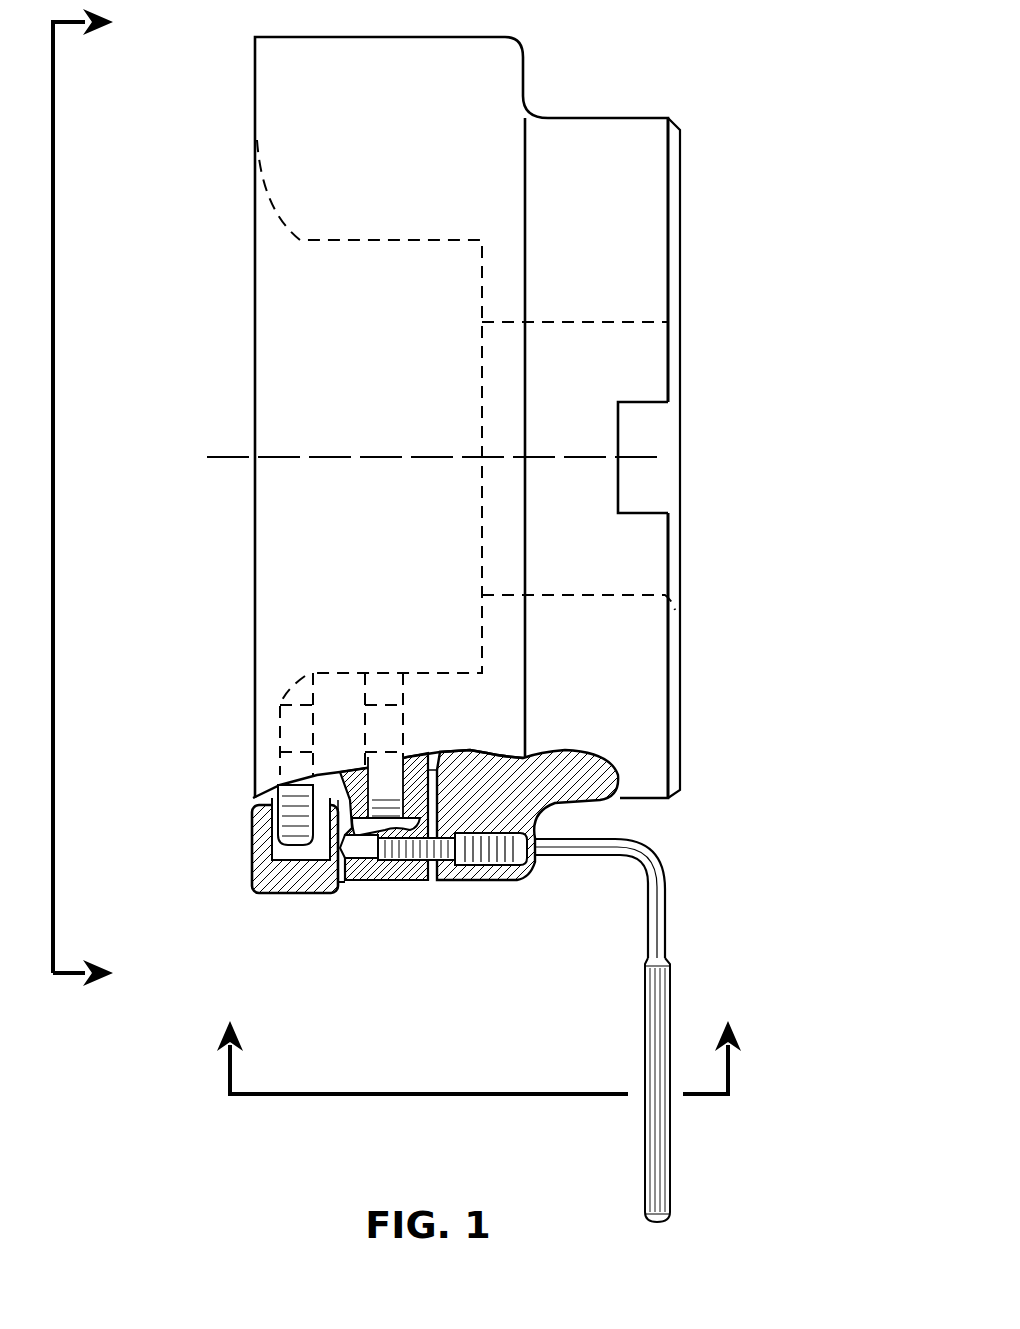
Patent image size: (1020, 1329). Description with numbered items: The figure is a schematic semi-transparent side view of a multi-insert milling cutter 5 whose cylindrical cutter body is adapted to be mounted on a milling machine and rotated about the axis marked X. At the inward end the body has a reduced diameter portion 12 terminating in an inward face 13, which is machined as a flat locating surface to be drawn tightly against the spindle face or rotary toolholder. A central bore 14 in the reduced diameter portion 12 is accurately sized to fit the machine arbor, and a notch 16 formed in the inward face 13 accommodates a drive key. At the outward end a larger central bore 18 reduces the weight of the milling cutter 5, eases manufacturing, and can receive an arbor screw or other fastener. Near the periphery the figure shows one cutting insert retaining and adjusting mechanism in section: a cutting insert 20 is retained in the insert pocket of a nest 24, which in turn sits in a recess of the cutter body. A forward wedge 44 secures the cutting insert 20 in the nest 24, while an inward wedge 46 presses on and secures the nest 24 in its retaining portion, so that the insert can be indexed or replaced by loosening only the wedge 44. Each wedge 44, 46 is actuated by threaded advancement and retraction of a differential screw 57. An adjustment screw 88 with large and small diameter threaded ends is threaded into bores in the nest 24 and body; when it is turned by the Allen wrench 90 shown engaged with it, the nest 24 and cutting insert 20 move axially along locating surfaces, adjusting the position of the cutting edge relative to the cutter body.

The milling cutter 5 is at (434, 611).
The reduced diameter portion 12 is at (630, 660).
The inward face 13 is at (685, 727).
The central bore 14 is at (702, 398).
The notch 16 is at (663, 495).
The larger central bore 18 is at (232, 375).
The cutting insert 20 is at (252, 880).
The nest 24 is at (385, 870).
The wedge 44 is at (305, 890).
The wedge 46 is at (370, 865).
The differential screw 57 is at (280, 826).
The adjustment screw 88 is at (490, 862).
The Allen wrench 90 is at (670, 1180).